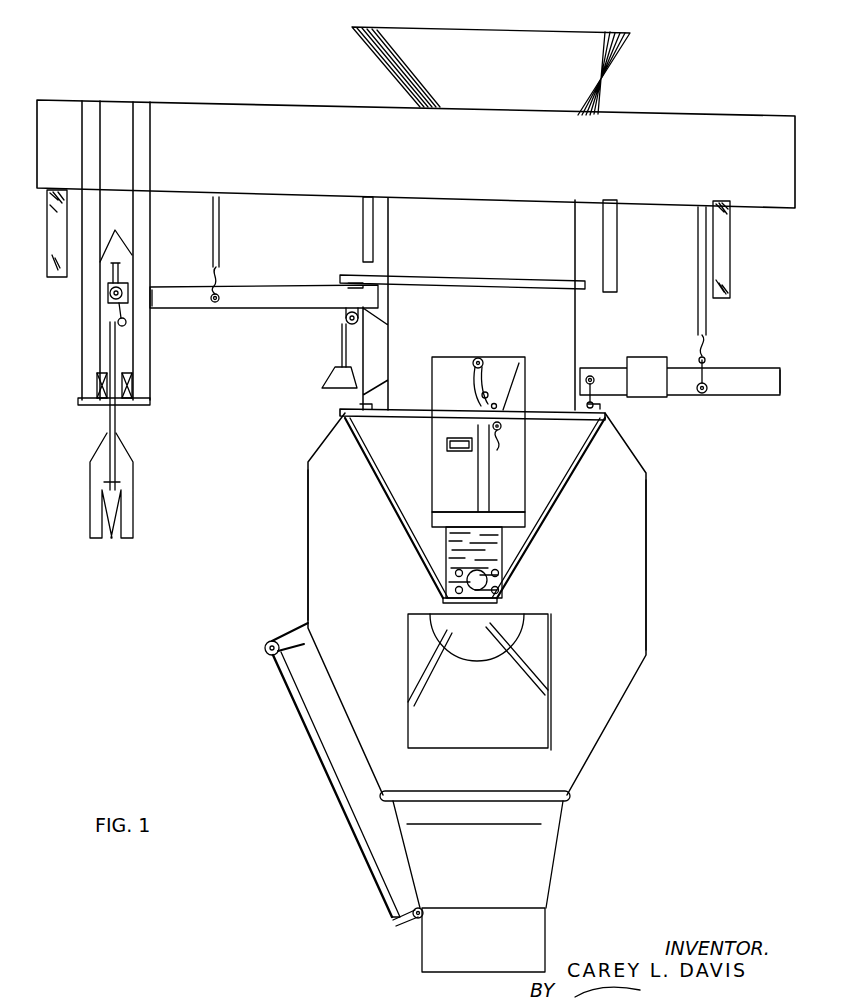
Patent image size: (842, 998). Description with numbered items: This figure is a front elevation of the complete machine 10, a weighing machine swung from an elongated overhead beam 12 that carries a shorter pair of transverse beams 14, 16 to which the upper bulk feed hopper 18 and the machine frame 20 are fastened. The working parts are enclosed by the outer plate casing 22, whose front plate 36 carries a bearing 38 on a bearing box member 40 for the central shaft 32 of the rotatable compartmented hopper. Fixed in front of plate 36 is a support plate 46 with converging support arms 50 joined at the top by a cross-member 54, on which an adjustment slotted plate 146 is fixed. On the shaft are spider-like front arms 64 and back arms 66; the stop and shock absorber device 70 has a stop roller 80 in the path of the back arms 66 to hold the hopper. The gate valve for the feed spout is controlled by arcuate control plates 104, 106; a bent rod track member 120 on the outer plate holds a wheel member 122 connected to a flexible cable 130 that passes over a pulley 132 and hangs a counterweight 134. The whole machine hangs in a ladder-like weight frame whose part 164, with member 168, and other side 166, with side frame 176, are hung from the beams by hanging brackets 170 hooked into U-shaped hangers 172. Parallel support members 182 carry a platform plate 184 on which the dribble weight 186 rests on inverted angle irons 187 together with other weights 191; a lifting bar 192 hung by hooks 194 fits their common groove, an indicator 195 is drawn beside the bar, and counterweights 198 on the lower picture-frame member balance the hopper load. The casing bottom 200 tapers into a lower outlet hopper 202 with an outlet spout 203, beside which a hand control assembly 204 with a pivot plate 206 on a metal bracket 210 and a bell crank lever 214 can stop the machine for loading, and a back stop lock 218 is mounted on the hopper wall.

The machine 10 is at (555, 345).
The elongated beam 12 is at (677, 110).
The transverse beam 14 is at (610, 248).
The transverse beam 16 is at (363, 236).
The upper bulk feed hopper 18 is at (592, 91).
The machine frame 20 is at (553, 303).
The outer plate casing 22 is at (330, 538).
The central shaft 32 is at (468, 581).
The front plate 36 is at (327, 570).
The bearing 38 is at (476, 592).
The bearing box member 40 is at (499, 565).
The support plate 46 is at (442, 567).
The converging support arm 50 is at (388, 487).
The cross-member 54 is at (342, 414).
The front arm 64 is at (532, 667).
The back arm 66 is at (424, 668).
The stop and shock absorber device 70 is at (503, 428).
The stop roller 80 is at (508, 447).
The outer arcuate control plate 104 is at (514, 374).
The inner arcuate control plate 106 is at (503, 407).
The bent rod track member 120 is at (477, 382).
The wheel member 122 is at (481, 362).
The flexible cable 130 is at (340, 340).
The pulley 132 is at (348, 316).
The counterweight 134 is at (323, 374).
The adjustment slotted plate 146 is at (488, 395).
The weight frame part 164 is at (240, 287).
The other side frame 166 is at (746, 381).
The spaced parallel member 168 is at (152, 290).
The hanging bracket 170 is at (213, 243).
The U-shaped hanger 172 is at (110, 303).
The side frame 176 is at (749, 395).
The support member 182 is at (92, 155).
The bottom support platform plate 184 is at (95, 403).
The dribble weight 186 is at (99, 376).
The inverted angle iron 187 is at (134, 388).
The weight 191 is at (119, 262).
The lifting bar 192 is at (116, 440).
The hook 194 is at (126, 323).
The indicator 195 is at (116, 484).
The counterweight 198 is at (97, 505).
The casing bottom 200 is at (590, 724).
The lower outlet hopper 202 is at (538, 847).
The outlet spout 203 is at (530, 940).
The hand control assembly 204 is at (265, 649).
The pivot plate 206 is at (405, 921).
The metal bracket 210 is at (421, 905).
The bell crank lever 214 is at (288, 636).
The back stop lock 218 is at (470, 451).